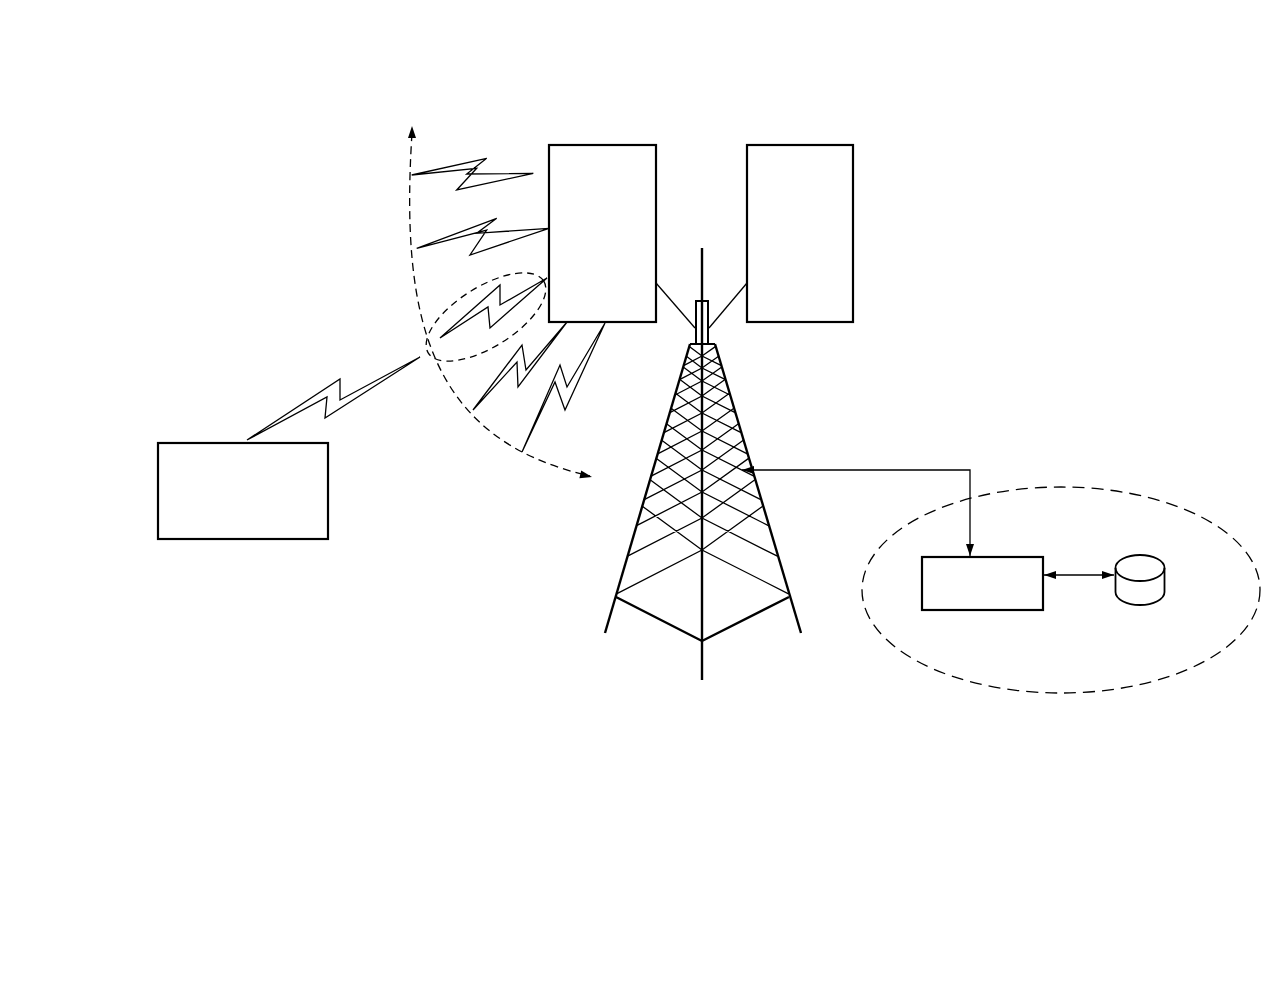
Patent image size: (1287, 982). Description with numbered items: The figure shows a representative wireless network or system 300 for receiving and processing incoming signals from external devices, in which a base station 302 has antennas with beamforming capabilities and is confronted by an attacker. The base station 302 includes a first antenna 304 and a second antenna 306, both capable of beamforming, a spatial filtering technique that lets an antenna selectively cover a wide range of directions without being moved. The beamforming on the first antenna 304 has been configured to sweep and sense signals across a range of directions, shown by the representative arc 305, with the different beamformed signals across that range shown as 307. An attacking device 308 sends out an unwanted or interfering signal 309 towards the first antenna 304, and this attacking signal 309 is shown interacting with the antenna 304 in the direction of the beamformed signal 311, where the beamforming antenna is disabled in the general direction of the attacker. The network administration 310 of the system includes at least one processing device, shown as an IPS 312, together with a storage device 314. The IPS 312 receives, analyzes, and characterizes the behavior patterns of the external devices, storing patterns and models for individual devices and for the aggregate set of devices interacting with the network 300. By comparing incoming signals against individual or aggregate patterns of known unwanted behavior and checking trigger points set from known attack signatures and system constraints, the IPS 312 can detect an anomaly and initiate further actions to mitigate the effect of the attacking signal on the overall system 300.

The wireless network or system 300 is at (303, 147).
The base station 302 is at (630, 638).
The first antenna 304 is at (605, 143).
The representative arc 305 is at (412, 230).
The second antenna 306 is at (853, 176).
The beamformed signals 307 is at (447, 148).
The attacking device 308 is at (220, 540).
The interfering signal 309 is at (330, 385).
The network administration 310 is at (1117, 460).
The beamformed signal 311 is at (460, 297).
The IPS 312 is at (997, 610).
The storage device 314 is at (1163, 587).